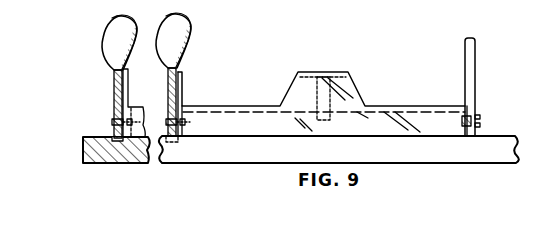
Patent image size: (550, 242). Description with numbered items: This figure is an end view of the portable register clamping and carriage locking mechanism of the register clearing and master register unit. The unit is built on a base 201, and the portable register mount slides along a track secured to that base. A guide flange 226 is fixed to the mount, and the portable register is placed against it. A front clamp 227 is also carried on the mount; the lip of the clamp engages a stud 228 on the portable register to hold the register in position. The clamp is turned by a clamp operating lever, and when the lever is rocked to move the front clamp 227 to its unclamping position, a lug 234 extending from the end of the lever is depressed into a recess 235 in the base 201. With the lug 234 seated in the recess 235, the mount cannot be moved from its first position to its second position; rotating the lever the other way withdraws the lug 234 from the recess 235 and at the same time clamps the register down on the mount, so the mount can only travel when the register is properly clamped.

The base 201 is at (490, 136).
The guide flange 226 is at (468, 73).
The front clamp 227 is at (222, 125).
The stud 228 is at (315, 100).
The lug 234 is at (112, 123).
The recess 235 is at (178, 141).